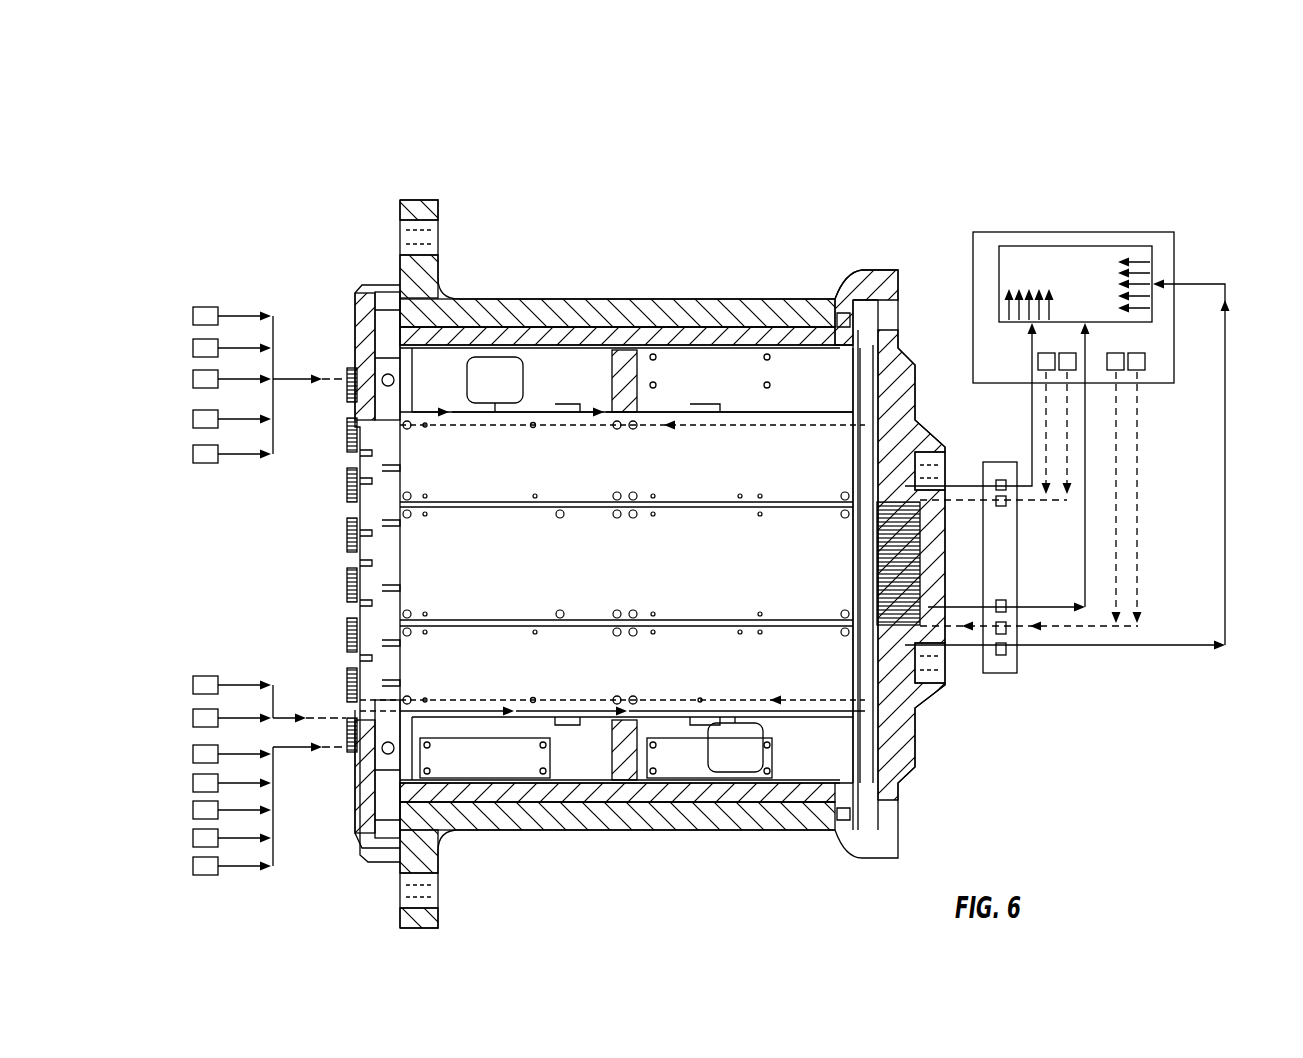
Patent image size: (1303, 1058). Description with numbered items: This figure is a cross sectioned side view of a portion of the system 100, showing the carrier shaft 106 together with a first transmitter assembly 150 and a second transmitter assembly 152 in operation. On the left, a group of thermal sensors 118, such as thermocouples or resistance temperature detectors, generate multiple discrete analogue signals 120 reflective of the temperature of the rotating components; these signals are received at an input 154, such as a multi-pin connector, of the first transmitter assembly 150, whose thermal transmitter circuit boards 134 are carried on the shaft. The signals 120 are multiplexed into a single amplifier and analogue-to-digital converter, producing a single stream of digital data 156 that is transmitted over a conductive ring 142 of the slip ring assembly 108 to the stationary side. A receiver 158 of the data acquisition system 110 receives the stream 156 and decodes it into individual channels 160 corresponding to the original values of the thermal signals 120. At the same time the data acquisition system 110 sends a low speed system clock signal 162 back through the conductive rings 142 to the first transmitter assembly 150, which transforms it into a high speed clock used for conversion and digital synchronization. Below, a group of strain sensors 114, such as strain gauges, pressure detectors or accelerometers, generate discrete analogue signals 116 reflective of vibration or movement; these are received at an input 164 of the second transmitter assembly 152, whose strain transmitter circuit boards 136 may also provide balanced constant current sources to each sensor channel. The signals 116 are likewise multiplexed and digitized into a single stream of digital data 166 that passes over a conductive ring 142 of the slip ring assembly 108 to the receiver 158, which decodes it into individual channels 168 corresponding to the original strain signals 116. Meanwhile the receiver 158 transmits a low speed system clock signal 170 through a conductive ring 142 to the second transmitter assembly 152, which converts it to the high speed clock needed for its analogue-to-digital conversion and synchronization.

The system 100 is at (1025, 160).
The carrier shaft 106 is at (650, 300).
The slip ring assembly 108 is at (1000, 676).
The data acquisition system 110 is at (1102, 225).
The strain sensors 114 is at (193, 685).
The discrete analogue signals 116 is at (556, 700).
The thermal sensors 118 is at (193, 316).
The discrete analogue signals 120 is at (243, 314).
The thermal transmitter circuit boards 134 is at (495, 357).
The strain transmitter circuit boards 136 is at (735, 775).
The conductive ring 142 is at (997, 478).
The first transmitter assembly 150 is at (548, 335).
The second transmitter assembly 152 is at (580, 800).
The input 154 is at (340, 355).
The single stream of digital data 156 is at (1032, 405).
The receiver 158 is at (999, 262).
The individual channels 160 is at (1010, 305).
The low speed system clock signal 162 is at (1046, 440).
The input 164 is at (340, 760).
The single stream of digital data 166 is at (1226, 282).
The individual channels 168 is at (1138, 262).
The low speed system clock signal 170 is at (1140, 480).